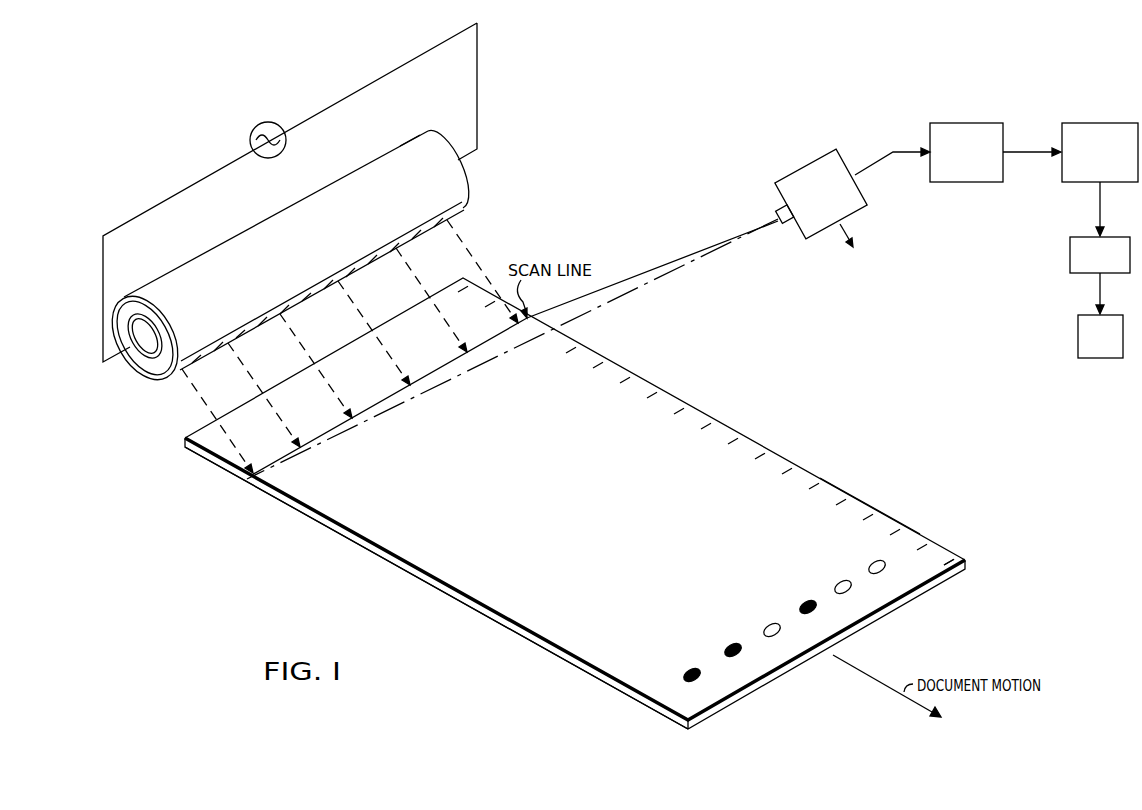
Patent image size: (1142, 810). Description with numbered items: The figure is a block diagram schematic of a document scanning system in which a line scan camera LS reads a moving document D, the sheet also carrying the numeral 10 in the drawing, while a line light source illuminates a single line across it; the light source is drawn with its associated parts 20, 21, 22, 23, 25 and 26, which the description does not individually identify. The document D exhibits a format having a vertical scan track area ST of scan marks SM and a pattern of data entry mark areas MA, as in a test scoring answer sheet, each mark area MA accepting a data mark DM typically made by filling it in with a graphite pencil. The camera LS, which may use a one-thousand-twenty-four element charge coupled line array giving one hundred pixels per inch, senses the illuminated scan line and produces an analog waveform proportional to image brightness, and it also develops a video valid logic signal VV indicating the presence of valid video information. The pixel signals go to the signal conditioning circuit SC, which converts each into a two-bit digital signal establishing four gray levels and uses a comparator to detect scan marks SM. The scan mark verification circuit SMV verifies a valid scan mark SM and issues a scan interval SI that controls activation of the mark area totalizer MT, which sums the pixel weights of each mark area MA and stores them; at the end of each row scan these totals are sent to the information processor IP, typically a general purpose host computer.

The document 10 is at (761, 405).
The illumination source panel 20 is at (333, 91).
The lamp 21 is at (145, 345).
The cylindrical reflector housing 22 is at (235, 238).
The slit aperture 23 is at (301, 295).
The end ring 25 is at (123, 305).
The reflector 26 is at (402, 150).
The document D is at (451, 598).
The scan marks SM is at (870, 508).
The scan track area ST is at (950, 556).
The data mark DM is at (672, 672).
The mark areas MA is at (804, 609).
The line scan camera LS is at (801, 165).
The video valid signal VV is at (854, 252).
The signal conditioning circuit SC is at (969, 122).
The scan mark verification circuit SMV is at (1113, 122).
The scan interval SI is at (1101, 209).
The mark area totalizer MT is at (1100, 255).
The information processor IP is at (1100, 336).